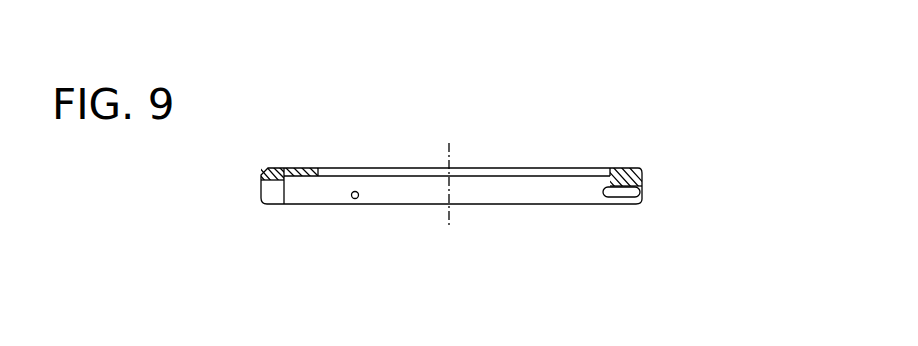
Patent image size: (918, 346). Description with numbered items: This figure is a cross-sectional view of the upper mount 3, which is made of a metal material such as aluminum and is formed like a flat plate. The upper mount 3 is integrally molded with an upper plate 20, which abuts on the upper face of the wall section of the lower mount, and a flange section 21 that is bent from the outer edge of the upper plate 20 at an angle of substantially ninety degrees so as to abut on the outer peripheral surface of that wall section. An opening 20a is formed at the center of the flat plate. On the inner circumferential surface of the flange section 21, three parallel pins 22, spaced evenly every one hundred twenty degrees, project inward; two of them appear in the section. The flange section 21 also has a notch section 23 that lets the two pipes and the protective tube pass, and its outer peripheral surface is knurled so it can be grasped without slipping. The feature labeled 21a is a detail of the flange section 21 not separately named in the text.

The upper mount 3 is at (668, 98).
The upper plate 20 is at (602, 168).
The opening 20a is at (573, 168).
The flange section 21 is at (645, 170).
The pin 21a is at (642, 186).
The parallel pins 22 is at (351, 199).
The notch section 23 is at (277, 198).